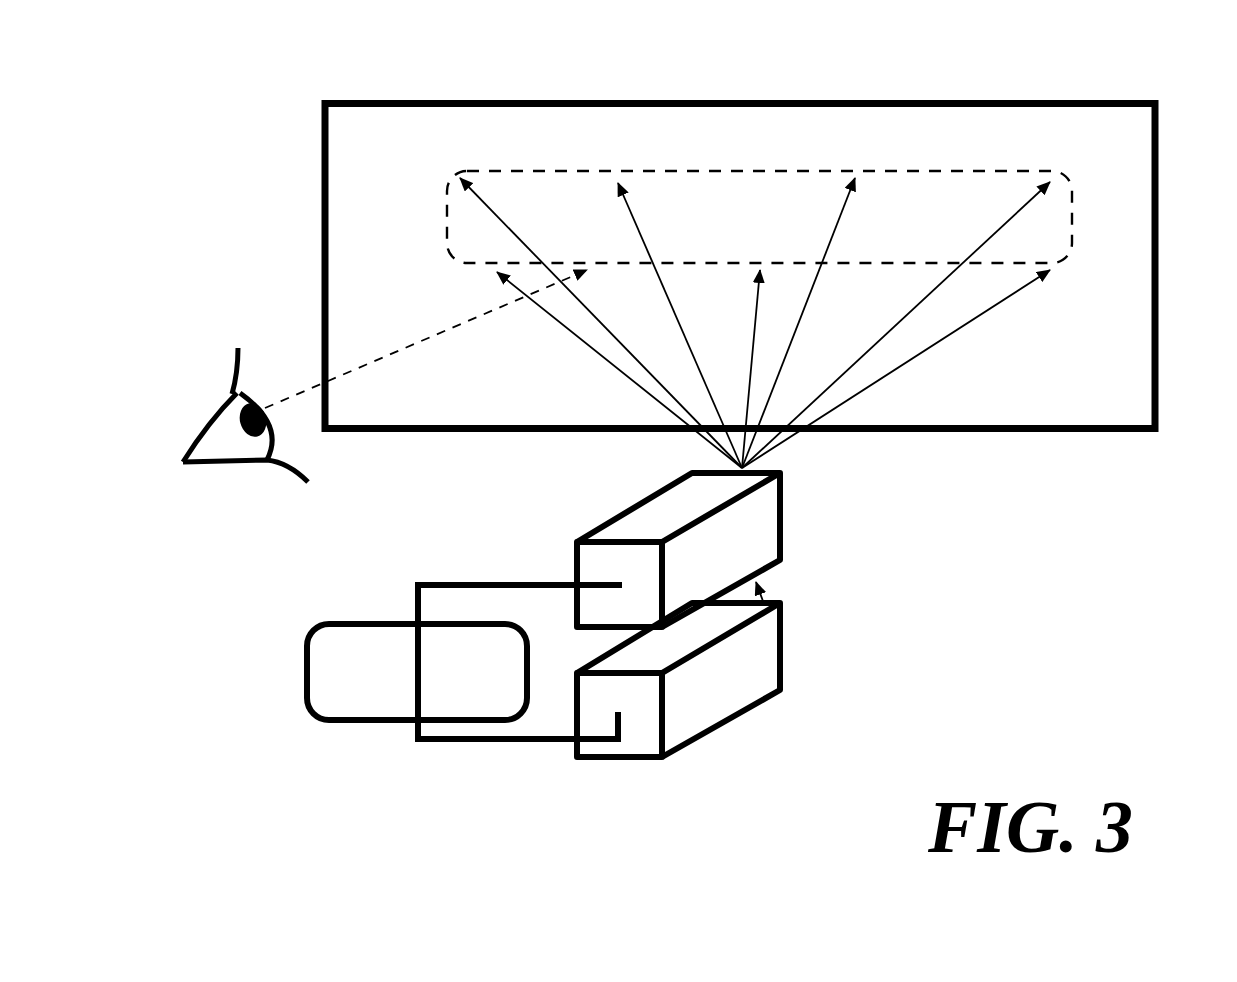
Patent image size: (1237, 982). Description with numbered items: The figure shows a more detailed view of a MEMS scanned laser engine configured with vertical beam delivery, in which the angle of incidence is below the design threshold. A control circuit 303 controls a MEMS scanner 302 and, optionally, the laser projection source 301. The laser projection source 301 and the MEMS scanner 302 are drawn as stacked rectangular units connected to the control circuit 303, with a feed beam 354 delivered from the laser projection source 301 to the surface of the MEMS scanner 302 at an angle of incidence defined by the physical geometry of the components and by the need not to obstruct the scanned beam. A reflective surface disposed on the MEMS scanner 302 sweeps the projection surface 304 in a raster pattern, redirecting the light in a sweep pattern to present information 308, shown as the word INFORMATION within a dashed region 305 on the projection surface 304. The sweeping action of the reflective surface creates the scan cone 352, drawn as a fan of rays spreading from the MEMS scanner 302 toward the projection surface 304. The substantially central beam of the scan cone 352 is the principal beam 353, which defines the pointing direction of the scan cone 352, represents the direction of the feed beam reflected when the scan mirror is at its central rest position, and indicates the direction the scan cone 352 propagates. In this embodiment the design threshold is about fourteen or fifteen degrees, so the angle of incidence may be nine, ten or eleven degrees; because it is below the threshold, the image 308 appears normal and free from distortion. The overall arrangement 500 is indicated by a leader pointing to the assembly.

The laser projection source 301 is at (713, 670).
The MEMS scanner 302 is at (662, 515).
The control circuit 303 is at (382, 680).
The projection surface 304 is at (1073, 432).
The virtual image display area 305 is at (417, 223).
The information 308 is at (653, 190).
The scan cone 352 is at (994, 327).
The principal beam 353 is at (752, 348).
The feed beam 354 is at (770, 583).
The head-up display system 500 is at (668, 621).